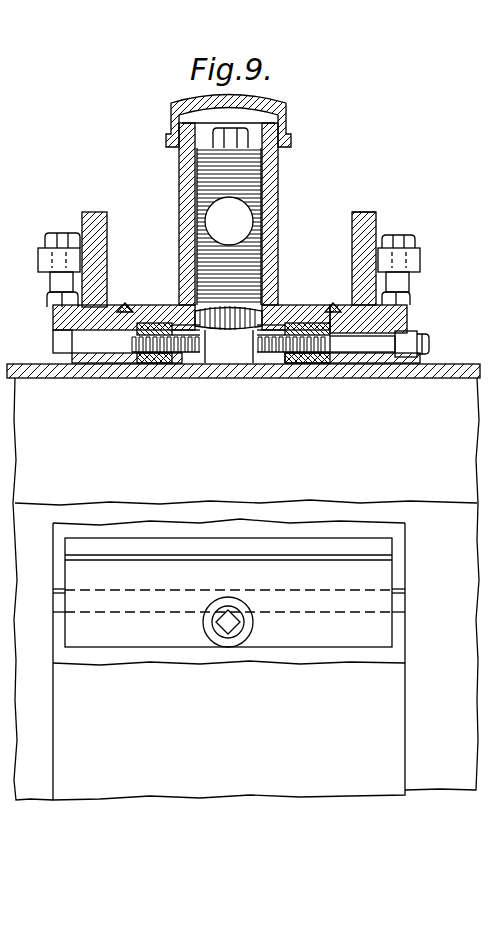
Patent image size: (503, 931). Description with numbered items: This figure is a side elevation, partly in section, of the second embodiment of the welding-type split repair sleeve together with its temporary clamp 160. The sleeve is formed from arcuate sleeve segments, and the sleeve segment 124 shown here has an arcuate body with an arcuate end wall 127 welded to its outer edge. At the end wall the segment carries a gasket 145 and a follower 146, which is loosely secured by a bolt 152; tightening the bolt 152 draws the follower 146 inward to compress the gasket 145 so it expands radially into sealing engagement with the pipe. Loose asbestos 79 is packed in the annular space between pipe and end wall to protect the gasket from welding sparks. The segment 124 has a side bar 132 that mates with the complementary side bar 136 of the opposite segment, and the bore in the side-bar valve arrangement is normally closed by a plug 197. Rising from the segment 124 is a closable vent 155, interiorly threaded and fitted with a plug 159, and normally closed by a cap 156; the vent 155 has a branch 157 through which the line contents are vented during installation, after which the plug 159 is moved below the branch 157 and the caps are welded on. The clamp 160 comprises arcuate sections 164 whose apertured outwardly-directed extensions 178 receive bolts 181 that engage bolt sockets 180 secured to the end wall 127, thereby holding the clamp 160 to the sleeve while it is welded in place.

The loose asbestos 79 is at (92, 360).
The sleeve segment 124 is at (293, 306).
The end wall 127 is at (408, 318).
The side bar 132 is at (386, 548).
The complementary side bar 136 is at (380, 634).
The gasket 145 is at (309, 358).
The follower 146 is at (188, 360).
The bolt 152 is at (364, 346).
The closable vent 155 is at (182, 186).
The cap 156 is at (284, 118).
The branch 157 is at (250, 240).
The plug 159 is at (250, 160).
The clamp 160 is at (361, 208).
The arcuate section 164 is at (82, 221).
The outwardly-directed extension 178 is at (421, 258).
The bolt socket 180 is at (409, 298).
The bolt 181 is at (413, 238).
The plug 197 is at (222, 634).